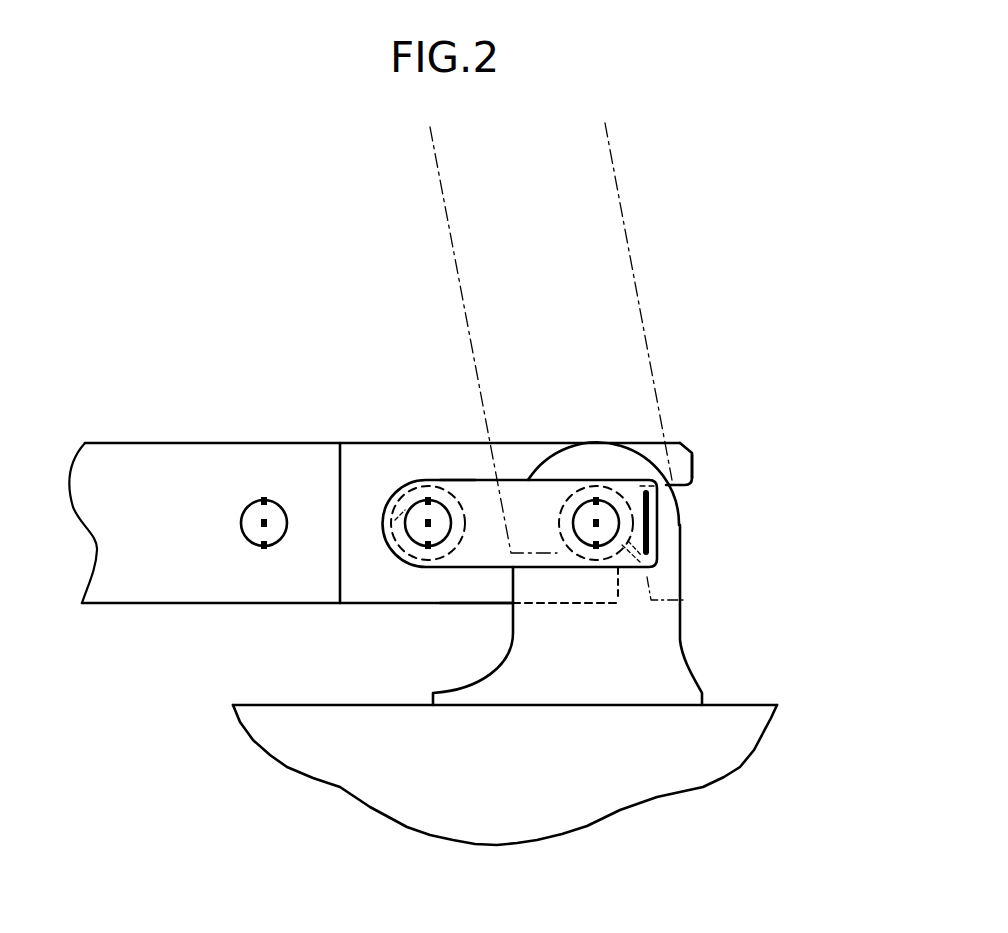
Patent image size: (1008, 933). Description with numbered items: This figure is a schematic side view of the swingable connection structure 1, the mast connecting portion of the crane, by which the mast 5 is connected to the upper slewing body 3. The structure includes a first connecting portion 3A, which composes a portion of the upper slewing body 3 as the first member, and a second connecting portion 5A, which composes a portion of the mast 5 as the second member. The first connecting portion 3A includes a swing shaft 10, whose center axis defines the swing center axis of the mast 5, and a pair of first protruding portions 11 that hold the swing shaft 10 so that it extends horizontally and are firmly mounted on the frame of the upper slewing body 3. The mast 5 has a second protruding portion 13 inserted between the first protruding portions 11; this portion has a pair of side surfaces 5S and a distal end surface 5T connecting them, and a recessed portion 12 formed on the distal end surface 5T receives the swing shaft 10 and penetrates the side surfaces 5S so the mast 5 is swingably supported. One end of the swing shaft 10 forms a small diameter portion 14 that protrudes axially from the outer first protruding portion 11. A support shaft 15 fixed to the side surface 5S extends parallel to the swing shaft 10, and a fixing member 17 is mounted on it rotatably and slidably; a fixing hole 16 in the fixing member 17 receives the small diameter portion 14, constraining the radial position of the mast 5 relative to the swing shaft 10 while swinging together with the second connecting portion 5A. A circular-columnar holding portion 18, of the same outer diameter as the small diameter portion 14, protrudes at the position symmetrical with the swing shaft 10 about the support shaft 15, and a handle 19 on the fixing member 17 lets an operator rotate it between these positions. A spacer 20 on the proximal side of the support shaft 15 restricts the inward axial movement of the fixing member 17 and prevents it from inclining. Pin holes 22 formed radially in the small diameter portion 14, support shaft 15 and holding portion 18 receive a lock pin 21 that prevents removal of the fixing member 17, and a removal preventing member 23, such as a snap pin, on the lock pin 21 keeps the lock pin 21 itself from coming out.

The swingable connection structure 1 is at (697, 357).
The upper slewing body 3 is at (665, 803).
The first connecting portion 3A is at (773, 652).
The mast 5 is at (148, 443).
The second connecting portion 5A is at (487, 607).
The side surface 5S is at (343, 606).
The distal end surface 5T is at (694, 476).
The swing shaft 10 is at (655, 570).
The first protruding portion 11 is at (680, 602).
The recessed portion 12 is at (668, 503).
The second protruding portion 13 is at (478, 440).
The small diameter portion 14 is at (615, 568).
The support shaft 15 is at (420, 480).
The fixing hole 16 is at (697, 458).
The fixing member 17 is at (457, 470).
The holding portion 18 is at (243, 500).
The handle 19 is at (650, 525).
The spacer 20 is at (400, 518).
The lock pin 21 is at (264, 497).
The pin hole 22 is at (242, 523).
The removal preventing member 23 is at (265, 549).